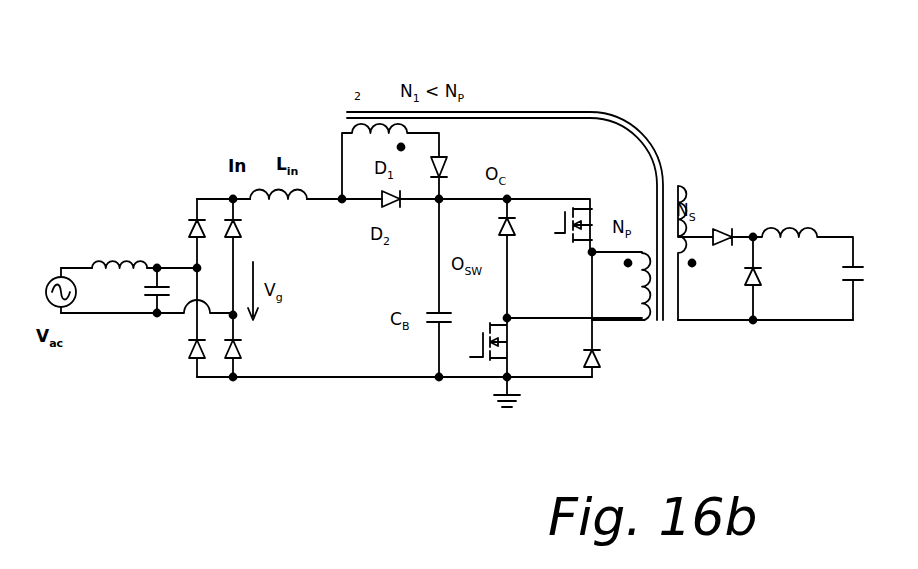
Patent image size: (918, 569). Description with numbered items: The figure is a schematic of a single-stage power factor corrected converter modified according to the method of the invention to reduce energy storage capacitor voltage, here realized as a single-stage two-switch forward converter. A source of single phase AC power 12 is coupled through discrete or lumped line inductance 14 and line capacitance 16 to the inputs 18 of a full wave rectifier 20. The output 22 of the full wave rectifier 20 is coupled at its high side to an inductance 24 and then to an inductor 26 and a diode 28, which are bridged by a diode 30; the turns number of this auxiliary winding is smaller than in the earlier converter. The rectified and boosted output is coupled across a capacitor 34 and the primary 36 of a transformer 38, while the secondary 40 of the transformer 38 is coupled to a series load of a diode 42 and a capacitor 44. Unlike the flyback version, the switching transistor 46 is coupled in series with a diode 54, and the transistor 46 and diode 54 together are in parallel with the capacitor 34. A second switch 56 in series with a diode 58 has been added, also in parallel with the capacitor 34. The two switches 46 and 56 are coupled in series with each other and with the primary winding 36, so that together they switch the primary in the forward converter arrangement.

The source of single phase AC power 12 is at (48, 280).
The line inductance 14 is at (97, 262).
The line capacitance 16 is at (143, 288).
The inputs of full wave rectifier 18 is at (197, 268).
The full wave rectifier 20 is at (268, 353).
The output of full wave rectifier 22 is at (232, 199).
The inductance 24 is at (263, 190).
The inductor 26 is at (358, 120).
The diode 28 is at (448, 167).
The diode 30 is at (378, 203).
The capacitor 34 is at (427, 323).
The primary 36 is at (657, 315).
The transformer 38 is at (675, 217).
The secondary 40 is at (683, 303).
The diode 42 is at (722, 230).
The capacitor 44 is at (862, 257).
The transistor 46 is at (510, 347).
The diode 54 is at (513, 223).
The second switch 56 is at (600, 215).
The diode 58 is at (602, 362).